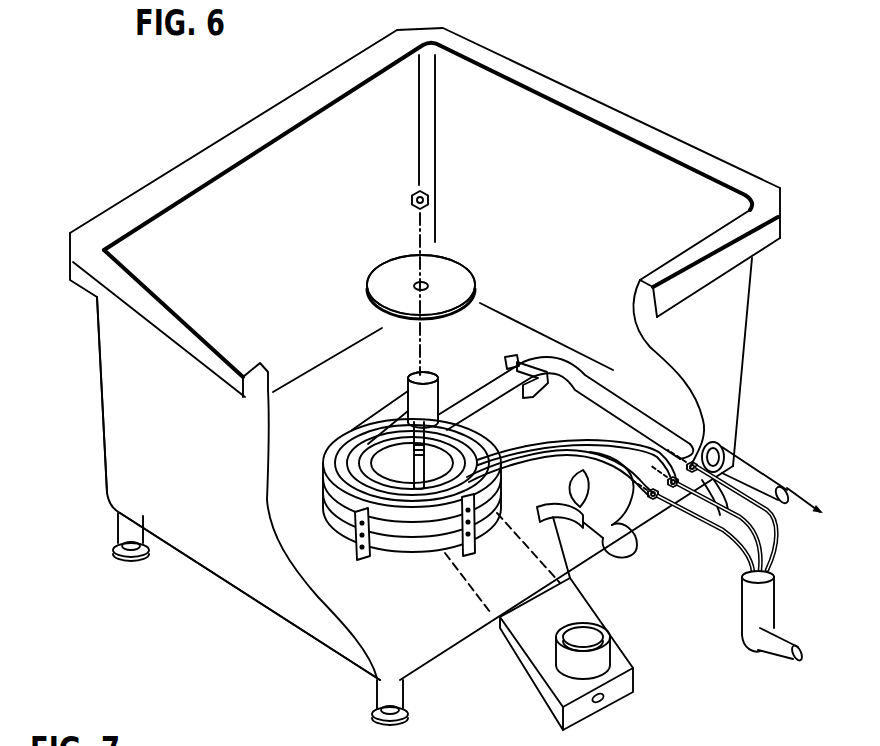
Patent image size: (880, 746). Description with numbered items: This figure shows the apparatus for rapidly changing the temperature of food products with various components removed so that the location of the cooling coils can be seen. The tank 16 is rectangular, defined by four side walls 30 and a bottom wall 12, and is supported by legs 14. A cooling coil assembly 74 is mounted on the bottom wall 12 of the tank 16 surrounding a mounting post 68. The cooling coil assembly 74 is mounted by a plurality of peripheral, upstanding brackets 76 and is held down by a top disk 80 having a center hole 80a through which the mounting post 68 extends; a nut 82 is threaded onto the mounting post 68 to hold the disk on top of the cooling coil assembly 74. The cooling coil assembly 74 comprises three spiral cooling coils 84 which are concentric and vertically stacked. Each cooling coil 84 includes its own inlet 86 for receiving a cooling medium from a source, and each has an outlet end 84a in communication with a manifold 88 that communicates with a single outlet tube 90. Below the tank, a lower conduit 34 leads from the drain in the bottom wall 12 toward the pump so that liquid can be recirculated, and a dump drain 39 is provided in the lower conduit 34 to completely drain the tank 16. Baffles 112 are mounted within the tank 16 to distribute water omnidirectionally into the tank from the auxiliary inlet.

The bottom wall 12 is at (267, 489).
The legs 14 is at (117, 527).
The tank 16 is at (95, 424).
The side walls 30 is at (117, 325).
The lower conduit 34 is at (563, 610).
The dump drain 39 is at (600, 702).
The mounting post 68 is at (425, 354).
The cooling coil assembly 74 is at (342, 428).
The upstanding brackets 76 is at (480, 432).
The top disk 80 is at (383, 277).
The center hole 80a is at (432, 280).
The nut 82 is at (410, 197).
The spiral cooling coils 84 is at (600, 523).
The outlet end 84a is at (376, 425).
The inlet 86 is at (738, 525).
The manifold 88 is at (428, 377).
The outlet tube 90 is at (673, 427).
The baffles 112 is at (553, 517).